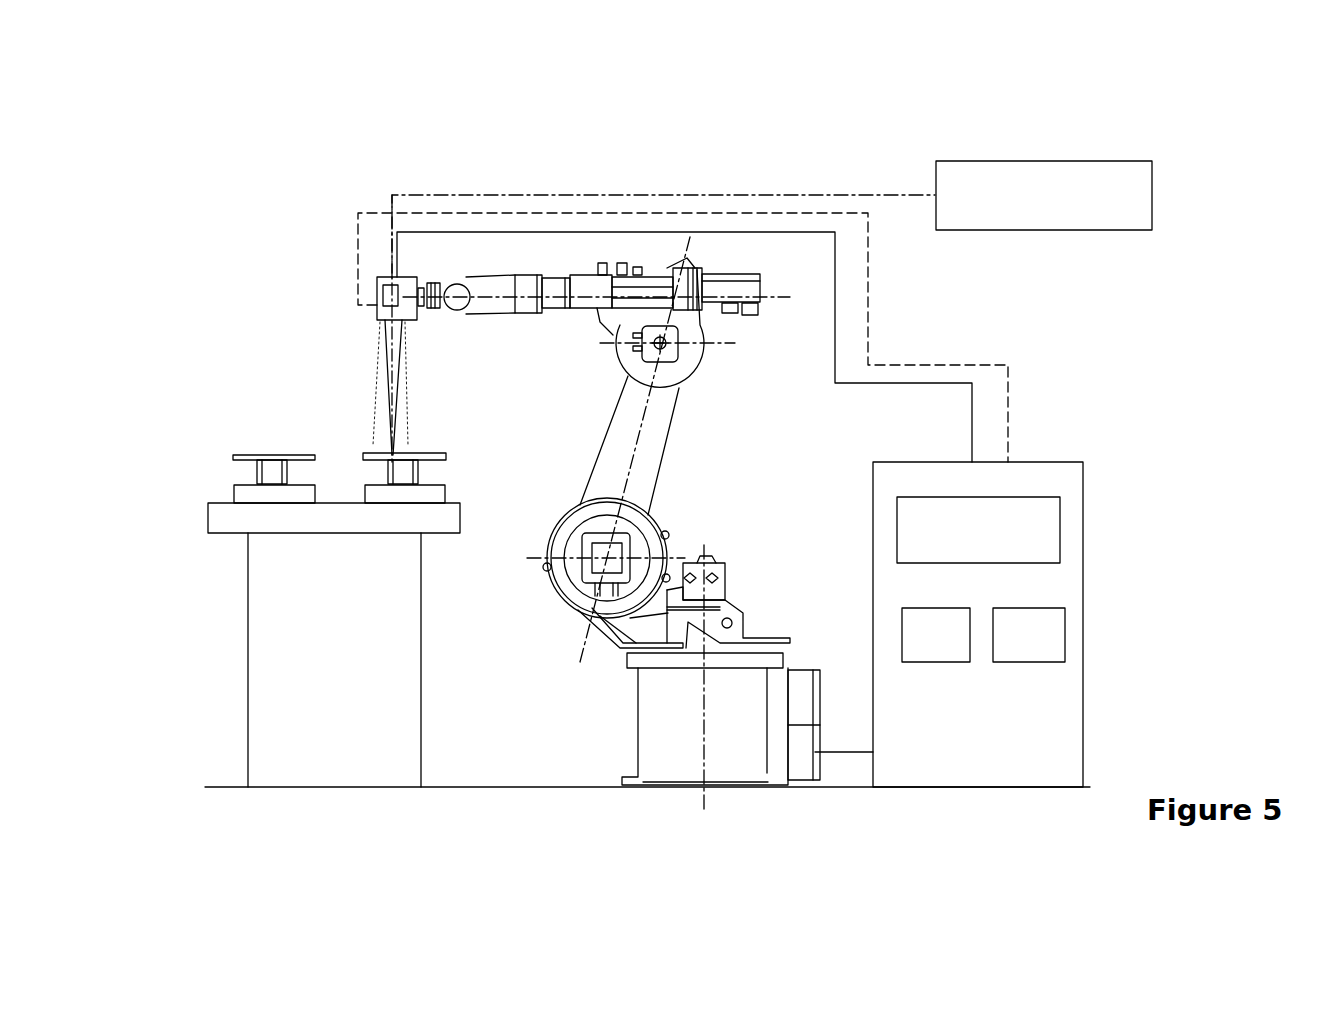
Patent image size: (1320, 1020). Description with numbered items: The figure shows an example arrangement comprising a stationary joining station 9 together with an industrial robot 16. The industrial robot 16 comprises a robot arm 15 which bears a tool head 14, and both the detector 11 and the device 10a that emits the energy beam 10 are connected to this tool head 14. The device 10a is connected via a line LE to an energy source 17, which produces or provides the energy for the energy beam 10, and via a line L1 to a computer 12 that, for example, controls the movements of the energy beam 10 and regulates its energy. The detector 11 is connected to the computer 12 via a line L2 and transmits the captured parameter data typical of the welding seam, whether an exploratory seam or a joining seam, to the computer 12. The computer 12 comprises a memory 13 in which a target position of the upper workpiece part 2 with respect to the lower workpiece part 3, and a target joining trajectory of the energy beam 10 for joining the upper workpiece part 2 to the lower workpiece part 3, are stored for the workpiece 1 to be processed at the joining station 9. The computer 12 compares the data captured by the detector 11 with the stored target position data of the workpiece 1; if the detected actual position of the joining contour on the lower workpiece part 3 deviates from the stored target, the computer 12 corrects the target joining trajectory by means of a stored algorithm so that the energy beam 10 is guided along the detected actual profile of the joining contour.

The workpiece 1 is at (222, 457).
The upper workpiece part 2 is at (437, 453).
The lower workpiece part 3 is at (420, 477).
The stationary joining station 9 is at (403, 652).
The energy beam 10 is at (393, 367).
The device emitting the energy beam 10a is at (405, 282).
The detector 11 is at (380, 440).
The computer 12 is at (1068, 483).
The memory 13 is at (1050, 635).
The tool head 14 is at (597, 297).
The robot arm 15 is at (620, 433).
The industrial robot 16 is at (688, 446).
The energy source 17 is at (1065, 185).
The line L1 is at (832, 347).
The line L2 is at (865, 348).
The line LE is at (663, 210).